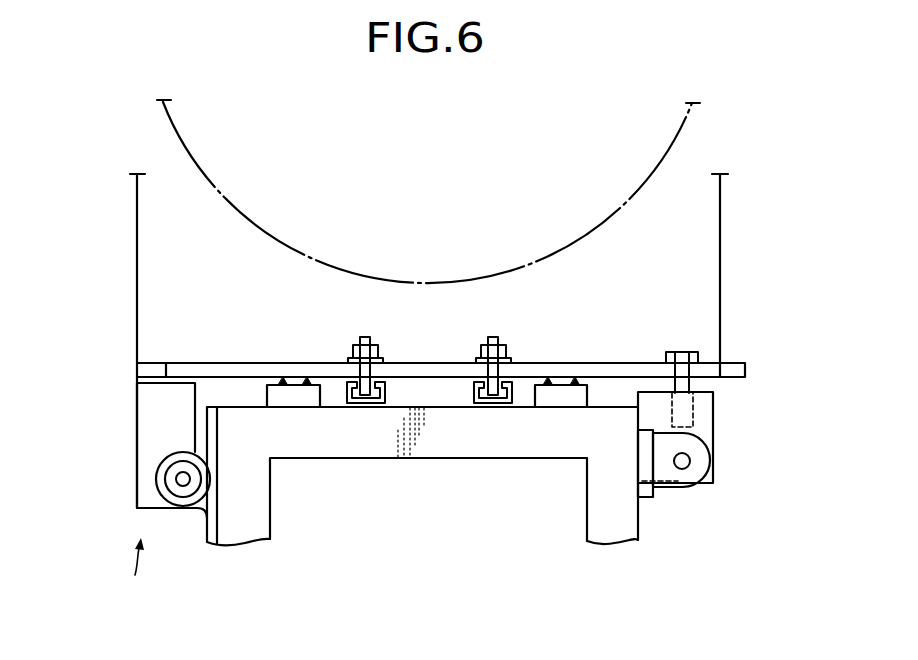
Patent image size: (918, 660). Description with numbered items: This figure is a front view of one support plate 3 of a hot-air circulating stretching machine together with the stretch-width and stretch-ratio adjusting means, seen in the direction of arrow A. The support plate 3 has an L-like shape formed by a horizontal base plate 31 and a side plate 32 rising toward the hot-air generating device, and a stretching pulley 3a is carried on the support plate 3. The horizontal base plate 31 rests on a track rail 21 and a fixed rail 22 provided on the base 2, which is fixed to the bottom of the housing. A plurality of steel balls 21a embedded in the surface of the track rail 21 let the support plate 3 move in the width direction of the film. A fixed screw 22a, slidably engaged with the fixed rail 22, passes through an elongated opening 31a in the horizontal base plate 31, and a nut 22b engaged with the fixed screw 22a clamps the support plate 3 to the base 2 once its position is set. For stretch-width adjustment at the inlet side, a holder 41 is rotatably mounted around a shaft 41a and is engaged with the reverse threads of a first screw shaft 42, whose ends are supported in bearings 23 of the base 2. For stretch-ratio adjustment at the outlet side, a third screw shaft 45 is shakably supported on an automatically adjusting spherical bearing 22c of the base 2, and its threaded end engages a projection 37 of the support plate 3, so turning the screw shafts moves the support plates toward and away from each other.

The stretching pulley 3a is at (670, 141).
The support plate 3 is at (137, 245).
The side plate 32 is at (722, 258).
The horizontal base plate 31 is at (744, 360).
The elongated opening 31a is at (458, 362).
The fixed rail 22 is at (363, 403).
The fixed screw 22a is at (361, 337).
The nut 22b is at (352, 346).
The automatically adjusting spherical bearing 22c is at (156, 480).
The track rail 21 is at (293, 407).
The steel ball 21a is at (307, 377).
The projection 37 is at (155, 411).
The third screw shaft 45 is at (183, 480).
The base 2 is at (600, 517).
The holder 41 is at (703, 428).
The shaft 41a is at (686, 389).
The bearing 23 is at (677, 480).
The first screw shaft 42 is at (690, 461).
The view direction arrow A is at (133, 574).